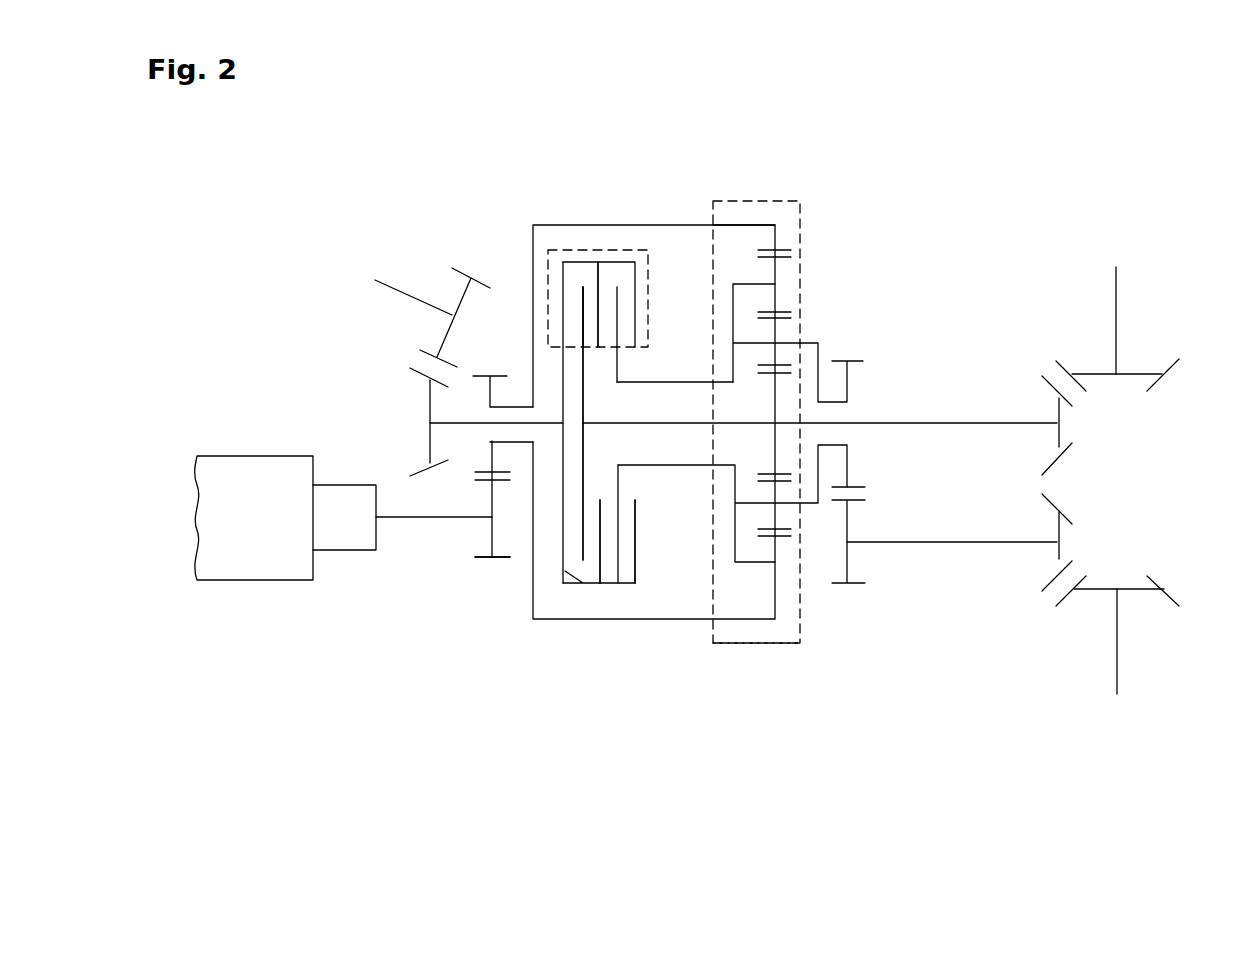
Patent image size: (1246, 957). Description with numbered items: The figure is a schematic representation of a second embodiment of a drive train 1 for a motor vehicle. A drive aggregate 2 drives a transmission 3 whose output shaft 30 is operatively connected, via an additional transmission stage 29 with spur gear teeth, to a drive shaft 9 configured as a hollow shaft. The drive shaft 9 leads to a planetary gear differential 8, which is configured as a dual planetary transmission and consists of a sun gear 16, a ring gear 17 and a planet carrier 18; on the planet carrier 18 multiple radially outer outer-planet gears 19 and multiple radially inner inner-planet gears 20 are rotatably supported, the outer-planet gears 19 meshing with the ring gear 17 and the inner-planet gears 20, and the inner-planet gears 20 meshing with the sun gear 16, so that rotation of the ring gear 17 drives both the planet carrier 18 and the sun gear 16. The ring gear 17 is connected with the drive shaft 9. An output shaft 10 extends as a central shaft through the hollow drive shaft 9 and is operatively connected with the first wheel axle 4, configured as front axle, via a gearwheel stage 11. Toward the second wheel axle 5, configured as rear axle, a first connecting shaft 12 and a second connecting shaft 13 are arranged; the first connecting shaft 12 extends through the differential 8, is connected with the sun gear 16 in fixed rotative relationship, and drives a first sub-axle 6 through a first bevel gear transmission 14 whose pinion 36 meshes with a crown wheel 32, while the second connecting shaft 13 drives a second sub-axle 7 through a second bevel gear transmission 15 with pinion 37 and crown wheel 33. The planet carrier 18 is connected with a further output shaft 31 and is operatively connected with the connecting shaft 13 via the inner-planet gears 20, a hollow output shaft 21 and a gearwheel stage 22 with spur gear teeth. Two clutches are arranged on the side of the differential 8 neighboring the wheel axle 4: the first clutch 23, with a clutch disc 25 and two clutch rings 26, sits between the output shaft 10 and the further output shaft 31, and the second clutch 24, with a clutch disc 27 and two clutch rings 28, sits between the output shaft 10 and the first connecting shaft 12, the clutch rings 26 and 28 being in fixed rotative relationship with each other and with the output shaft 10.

The drive train 1 is at (756, 672).
The drive aggregate 2 is at (258, 568).
The transmission 3 is at (343, 537).
The first wheel axle 4 is at (432, 270).
The second wheel axle 5 is at (1076, 263).
The first sub-axle 6 is at (1116, 295).
The second sub-axle 7 is at (1118, 660).
The planetary gear differential 8 is at (776, 187).
The drive shaft 9 is at (548, 620).
The output shaft 10 is at (457, 425).
The gearwheel stage 11 is at (375, 376).
The first connecting shaft 12 is at (935, 420).
The second connecting shaft 13 is at (930, 540).
The first bevel gear transmission 14 is at (1039, 357).
The second bevel gear transmission 15 is at (1039, 619).
The sun gear 16 is at (775, 397).
The ring gear 17 is at (747, 225).
The planet carrier 18 is at (735, 503).
The outer-planet gears 19 is at (775, 265).
The inner-planet gears 20 is at (775, 333).
The output shaft 21 is at (833, 410).
The gearwheel stage 22 is at (875, 570).
The first clutch 23 is at (632, 227).
The second clutch 24 is at (558, 227).
The clutch disc 25 is at (620, 552).
The clutch rings 26 is at (635, 310).
The clutch disc 27 is at (585, 457).
The clutch rings 28 is at (587, 583).
The additional transmission stage 29 is at (470, 547).
The output shaft of the transmission 30 is at (388, 520).
The further output shaft 31 is at (690, 382).
The crown wheel 32 is at (1132, 377).
The crown wheel 33 is at (1129, 565).
The pinion 36 is at (1057, 410).
The pinion 37 is at (1057, 527).